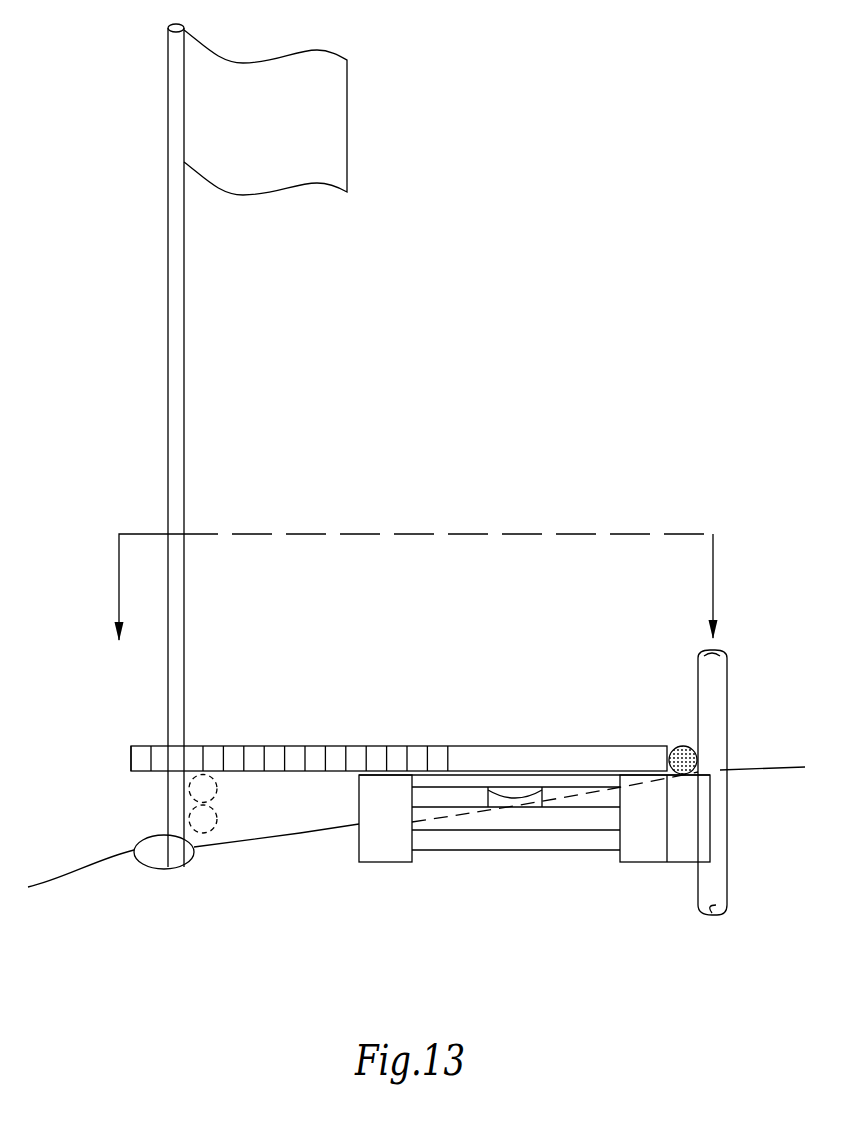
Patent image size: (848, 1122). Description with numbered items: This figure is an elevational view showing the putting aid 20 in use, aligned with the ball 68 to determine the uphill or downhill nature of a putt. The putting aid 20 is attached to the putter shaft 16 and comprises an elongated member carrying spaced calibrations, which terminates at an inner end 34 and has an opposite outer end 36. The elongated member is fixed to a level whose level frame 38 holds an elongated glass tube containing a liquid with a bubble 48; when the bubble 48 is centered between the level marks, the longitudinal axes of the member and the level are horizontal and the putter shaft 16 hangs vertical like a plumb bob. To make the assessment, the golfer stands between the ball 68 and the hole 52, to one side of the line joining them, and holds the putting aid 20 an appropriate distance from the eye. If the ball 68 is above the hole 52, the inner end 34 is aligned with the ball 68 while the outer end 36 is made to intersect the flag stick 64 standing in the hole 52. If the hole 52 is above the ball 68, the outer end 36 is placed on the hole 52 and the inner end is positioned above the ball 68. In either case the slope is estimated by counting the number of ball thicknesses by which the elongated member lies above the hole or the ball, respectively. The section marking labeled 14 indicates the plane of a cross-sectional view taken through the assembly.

The section line 14 is at (403, 570).
The putter shaft 16 is at (722, 700).
The putting aid 20 is at (299, 744).
The inner end 34 is at (676, 748).
The outer end 36 is at (131, 770).
The level frame 38 is at (371, 868).
The bubble 48 is at (515, 788).
The hole 52 is at (194, 850).
The flag stick 64 is at (177, 612).
The ball 68 is at (690, 746).